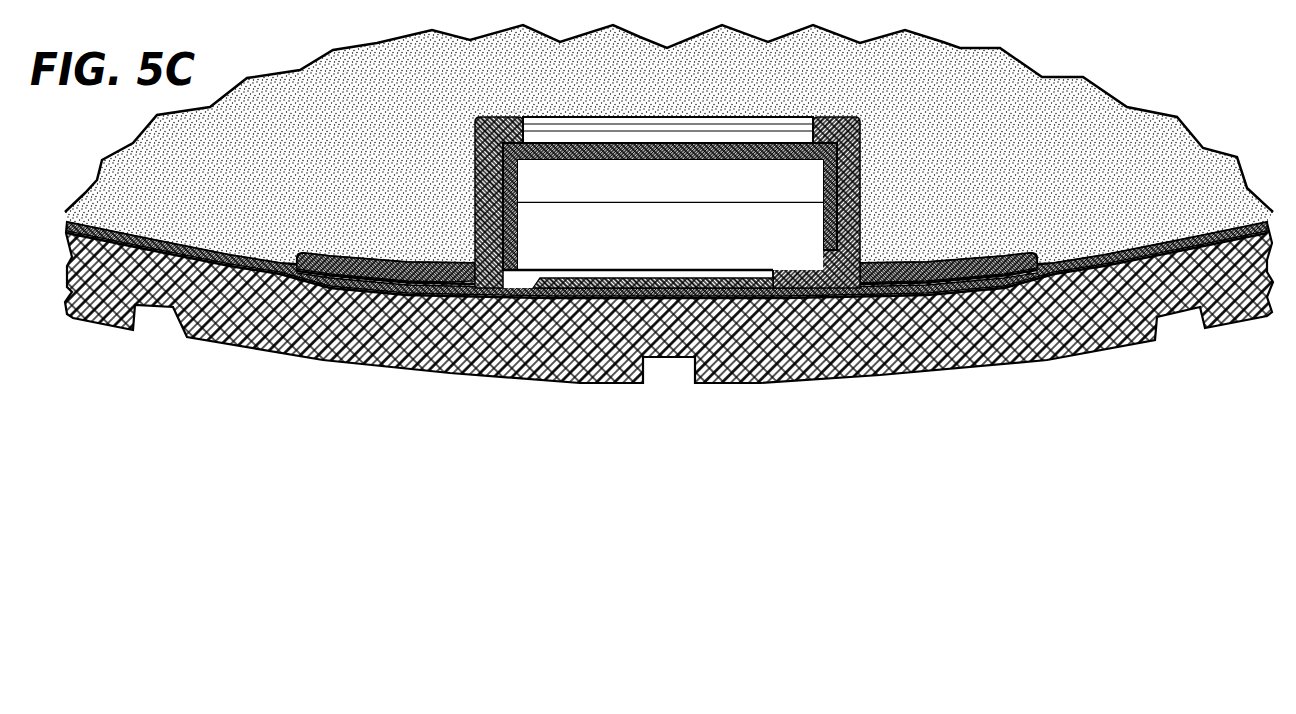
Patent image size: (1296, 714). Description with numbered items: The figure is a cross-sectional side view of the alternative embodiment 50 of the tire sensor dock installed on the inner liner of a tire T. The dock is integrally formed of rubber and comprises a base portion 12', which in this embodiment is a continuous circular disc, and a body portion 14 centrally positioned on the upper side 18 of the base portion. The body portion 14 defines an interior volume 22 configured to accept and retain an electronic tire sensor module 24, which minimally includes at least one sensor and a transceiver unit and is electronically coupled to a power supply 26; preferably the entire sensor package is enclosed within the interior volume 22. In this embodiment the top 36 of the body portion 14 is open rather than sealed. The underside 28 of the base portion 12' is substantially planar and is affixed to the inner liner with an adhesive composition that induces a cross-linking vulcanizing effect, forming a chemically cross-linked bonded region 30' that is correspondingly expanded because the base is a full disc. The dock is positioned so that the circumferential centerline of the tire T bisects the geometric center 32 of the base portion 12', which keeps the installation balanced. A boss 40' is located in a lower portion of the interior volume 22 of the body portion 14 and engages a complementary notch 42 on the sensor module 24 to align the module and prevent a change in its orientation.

The tire T is at (112, 324).
The base portion 12' is at (364, 161).
The body portion 14 is at (475, 154).
The upper side of the base portion 18 is at (922, 250).
The interior volume 22 is at (719, 134).
The electronic tire sensor module 24 is at (663, 236).
The power supply 26 is at (670, 181).
The underside of the base portion 28 is at (932, 288).
The cross-linked bonded region 30' is at (667, 306).
The geometric center of the base portion 32 is at (520, 183).
The top of the body portion 36 is at (641, 124).
The boss 40' is at (839, 144).
The notch 42 is at (757, 290).
The alternative embodiment of the tire sensor dock 50 is at (517, 88).